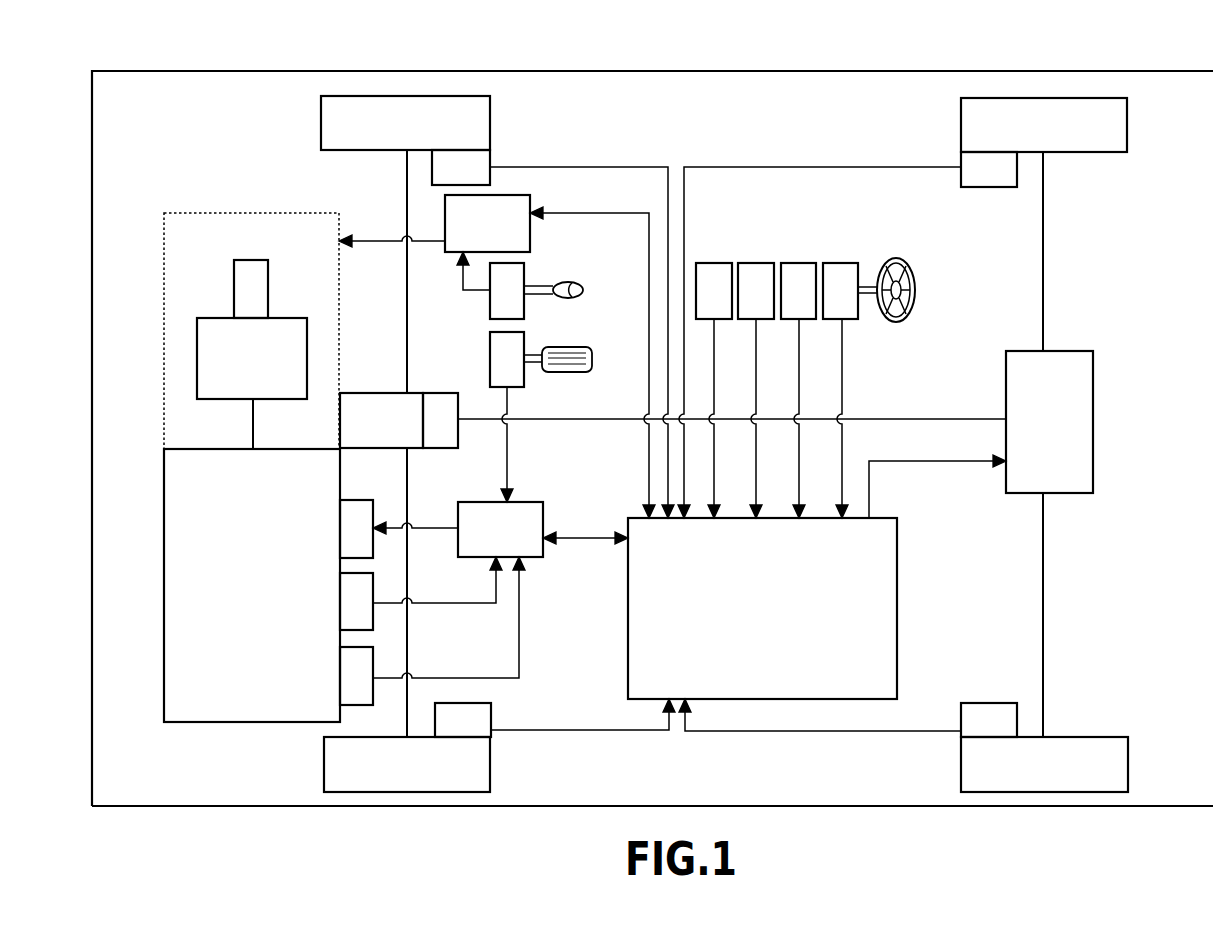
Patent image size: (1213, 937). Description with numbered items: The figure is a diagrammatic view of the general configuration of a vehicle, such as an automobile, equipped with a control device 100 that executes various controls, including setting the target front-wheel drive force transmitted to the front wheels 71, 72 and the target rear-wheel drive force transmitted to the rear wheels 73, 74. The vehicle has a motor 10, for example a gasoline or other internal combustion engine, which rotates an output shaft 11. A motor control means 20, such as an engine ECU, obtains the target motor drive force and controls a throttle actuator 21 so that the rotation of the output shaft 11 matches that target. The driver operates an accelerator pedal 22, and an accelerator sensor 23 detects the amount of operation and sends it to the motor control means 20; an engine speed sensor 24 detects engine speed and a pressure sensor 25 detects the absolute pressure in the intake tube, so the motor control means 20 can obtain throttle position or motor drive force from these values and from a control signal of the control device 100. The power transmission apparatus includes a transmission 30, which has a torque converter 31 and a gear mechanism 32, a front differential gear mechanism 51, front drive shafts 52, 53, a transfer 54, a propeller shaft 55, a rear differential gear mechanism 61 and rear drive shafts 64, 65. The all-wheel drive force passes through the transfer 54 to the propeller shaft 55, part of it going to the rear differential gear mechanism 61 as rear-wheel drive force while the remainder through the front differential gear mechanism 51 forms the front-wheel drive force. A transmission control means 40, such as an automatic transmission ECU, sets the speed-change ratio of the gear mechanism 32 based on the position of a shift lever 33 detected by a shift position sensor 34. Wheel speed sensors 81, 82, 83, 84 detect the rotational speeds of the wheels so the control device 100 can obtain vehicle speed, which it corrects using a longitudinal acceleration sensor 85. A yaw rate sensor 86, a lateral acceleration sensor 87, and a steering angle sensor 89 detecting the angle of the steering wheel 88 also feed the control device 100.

The motor 10 is at (253, 722).
The output shaft 11 is at (253, 430).
The motor control means 20 is at (524, 502).
The throttle actuator 21 is at (368, 500).
The accelerator pedal 22 is at (592, 358).
The accelerator sensor 23 is at (524, 334).
The engine speed sensor 24 is at (368, 573).
The pressure sensor 25 is at (368, 647).
The transmission 30 is at (290, 213).
The torque converter 31 is at (285, 318).
The gear mechanism 32 is at (234, 292).
The shift lever 33 is at (583, 290).
The shift position sensor 34 is at (524, 266).
The transmission control means 40 is at (530, 199).
The front differential gear mechanism 51 is at (380, 393).
The front drive shaft 52 is at (407, 372).
The front drive shaft 53 is at (407, 494).
The transfer 54 is at (458, 400).
The propeller shaft 55 is at (562, 419).
The rear differential gear mechanism 61 is at (1082, 351).
The rear drive shaft 64 is at (1043, 300).
The rear drive shaft 65 is at (1043, 546).
The front wheel 71 is at (490, 107).
The front wheel 72 is at (490, 760).
The rear wheel 73 is at (1068, 152).
The rear wheel 74 is at (1080, 737).
The wheel speed sensor 81 is at (490, 160).
The wheel speed sensor 82 is at (491, 712).
The wheel speed sensor 83 is at (990, 187).
The wheel speed sensor 84 is at (990, 703).
The longitudinal acceleration sensor 85 is at (712, 263).
The yaw rate sensor 86 is at (754, 263).
The lateral acceleration sensor 87 is at (797, 263).
The steering wheel 88 is at (915, 290).
The steering angle sensor 89 is at (840, 263).
The control device 100 is at (897, 598).